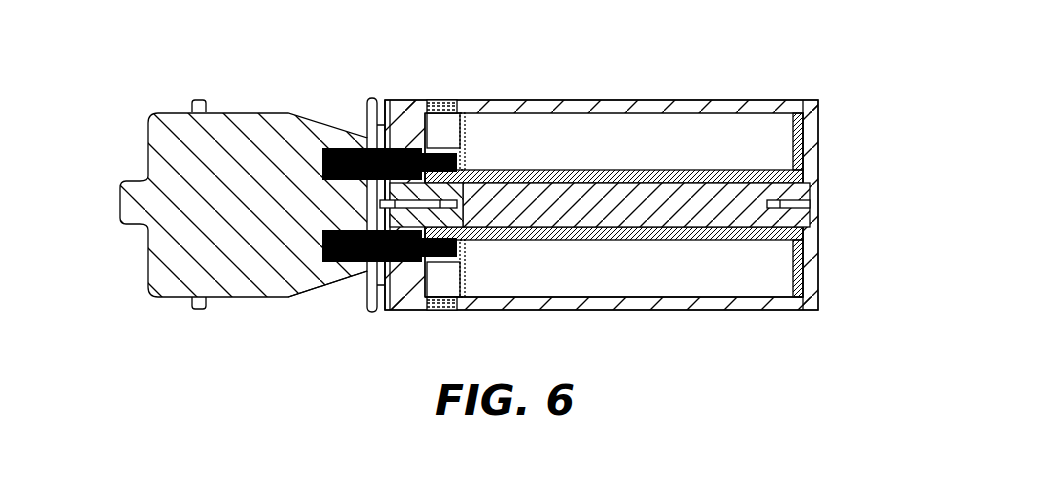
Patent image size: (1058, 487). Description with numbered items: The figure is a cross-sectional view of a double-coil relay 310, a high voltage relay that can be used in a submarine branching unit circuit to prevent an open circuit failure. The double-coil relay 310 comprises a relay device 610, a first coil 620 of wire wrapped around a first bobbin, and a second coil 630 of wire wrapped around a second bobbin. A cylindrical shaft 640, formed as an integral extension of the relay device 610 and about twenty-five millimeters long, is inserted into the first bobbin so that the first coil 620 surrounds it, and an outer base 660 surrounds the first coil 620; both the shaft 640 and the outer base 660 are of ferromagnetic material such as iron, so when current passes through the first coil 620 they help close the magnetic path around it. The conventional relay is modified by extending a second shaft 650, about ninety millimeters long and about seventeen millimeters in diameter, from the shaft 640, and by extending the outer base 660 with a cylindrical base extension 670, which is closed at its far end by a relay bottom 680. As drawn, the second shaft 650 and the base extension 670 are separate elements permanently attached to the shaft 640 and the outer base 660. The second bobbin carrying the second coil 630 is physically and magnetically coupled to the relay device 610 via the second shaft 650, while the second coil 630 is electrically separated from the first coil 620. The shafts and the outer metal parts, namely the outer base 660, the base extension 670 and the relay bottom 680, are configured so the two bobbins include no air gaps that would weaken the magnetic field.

The double-coil relay 310 is at (789, 58).
The relay device 610 is at (162, 297).
The first coil 620 is at (341, 284).
The second coil 630 is at (630, 288).
The shaft 640 is at (366, 189).
The second shaft 650 is at (817, 215).
The outer base 660 is at (398, 303).
The base extension 670 is at (757, 307).
The relay bottom 680 is at (818, 142).